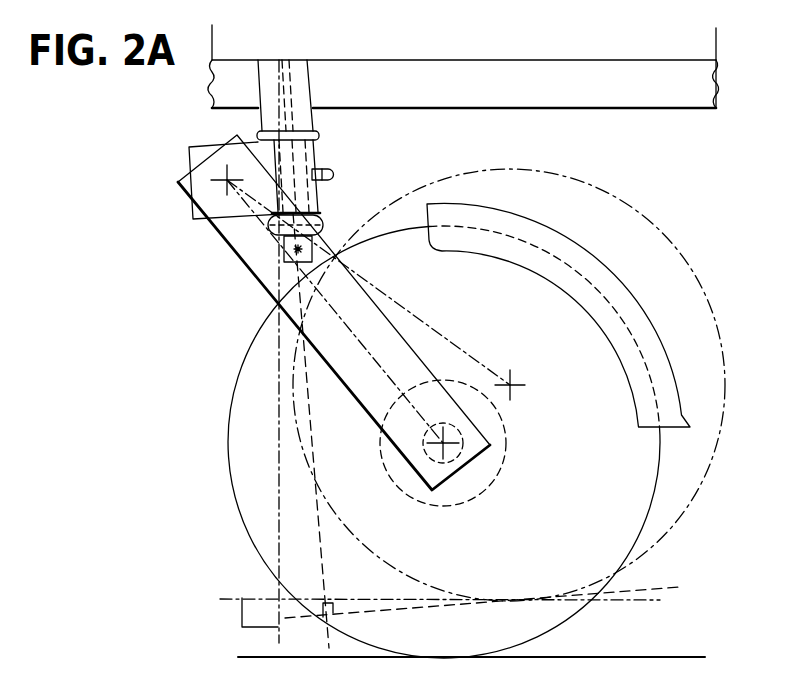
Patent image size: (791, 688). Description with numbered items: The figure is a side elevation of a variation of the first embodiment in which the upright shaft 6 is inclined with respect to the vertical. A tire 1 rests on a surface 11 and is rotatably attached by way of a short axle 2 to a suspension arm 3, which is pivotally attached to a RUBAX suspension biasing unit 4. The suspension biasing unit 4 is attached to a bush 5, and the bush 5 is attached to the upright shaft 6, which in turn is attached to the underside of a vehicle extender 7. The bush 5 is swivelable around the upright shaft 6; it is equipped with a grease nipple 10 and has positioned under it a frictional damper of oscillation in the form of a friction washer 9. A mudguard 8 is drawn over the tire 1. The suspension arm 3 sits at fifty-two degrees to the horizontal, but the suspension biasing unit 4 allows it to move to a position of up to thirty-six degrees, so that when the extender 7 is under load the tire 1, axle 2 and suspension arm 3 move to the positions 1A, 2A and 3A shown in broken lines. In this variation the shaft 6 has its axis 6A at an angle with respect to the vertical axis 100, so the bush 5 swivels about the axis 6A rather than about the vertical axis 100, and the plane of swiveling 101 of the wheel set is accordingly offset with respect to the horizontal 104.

The tire 1 is at (633, 497).
The tire position under load 1A is at (597, 188).
The short axle 2 is at (450, 460).
The axle position under load 2A is at (484, 406).
The suspension arm 3 is at (238, 238).
The suspension arm position under load 3A is at (410, 314).
The suspension biasing unit 4 is at (190, 157).
The bush 5 is at (303, 150).
The upright shaft 6 is at (305, 85).
The axis of upright shaft 6A is at (312, 413).
The vehicle extender 7 is at (673, 45).
The fender 8 is at (542, 237).
The friction washer 9 is at (318, 212).
The grease nipple 10 is at (334, 173).
The surface 11 is at (597, 668).
The vertical axis 100 is at (278, 551).
The plane of swiveling 101 is at (665, 587).
The horizontal 104 is at (633, 603).